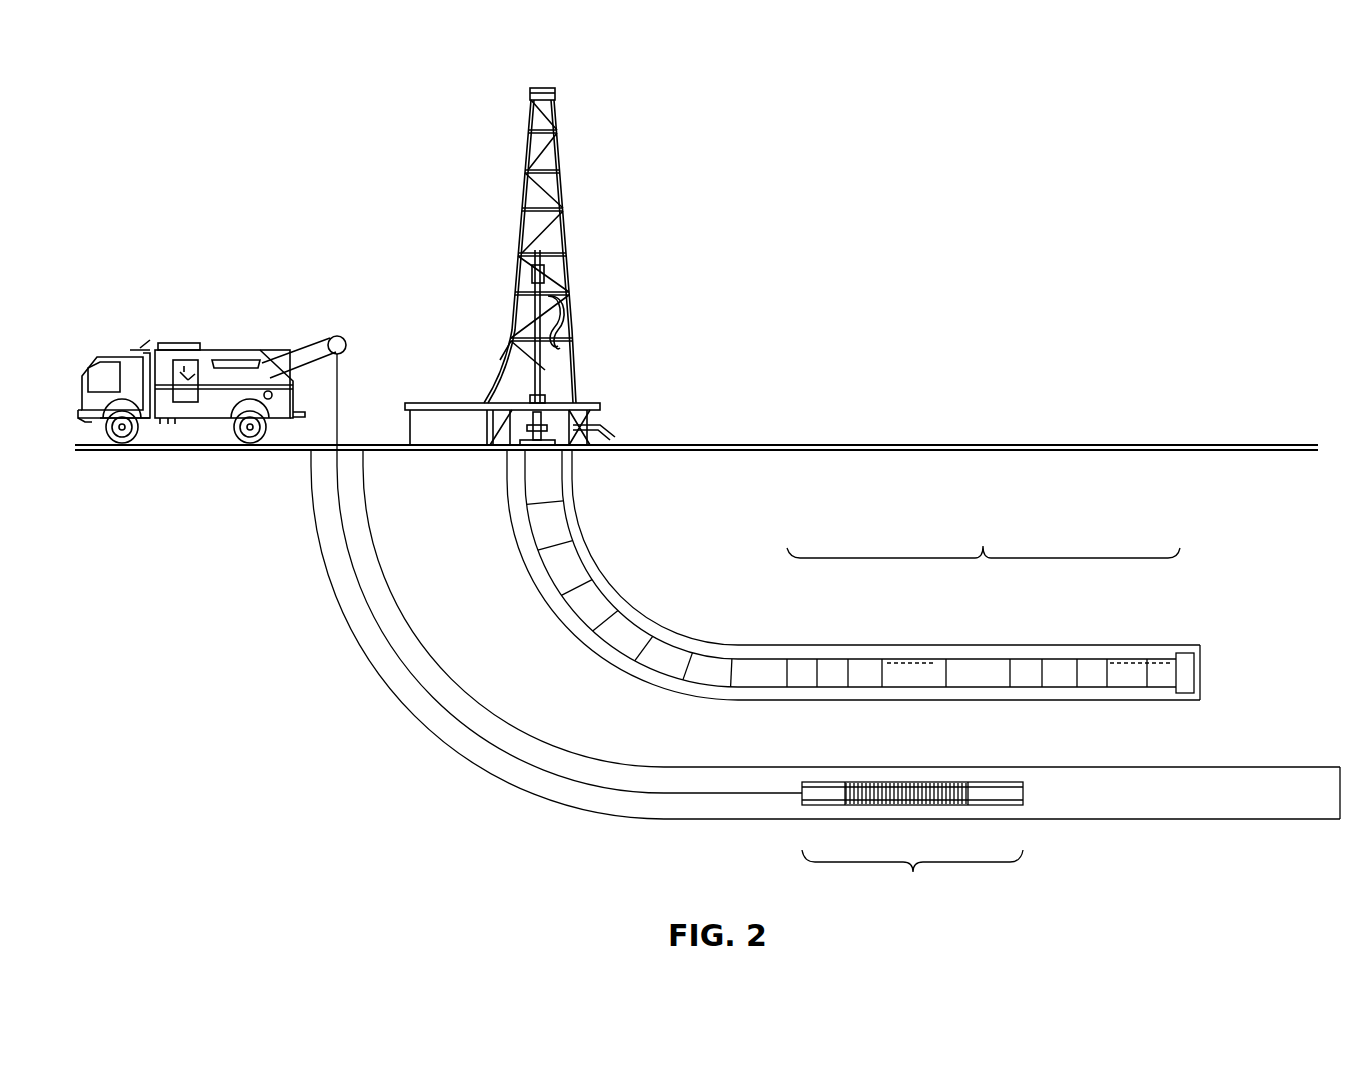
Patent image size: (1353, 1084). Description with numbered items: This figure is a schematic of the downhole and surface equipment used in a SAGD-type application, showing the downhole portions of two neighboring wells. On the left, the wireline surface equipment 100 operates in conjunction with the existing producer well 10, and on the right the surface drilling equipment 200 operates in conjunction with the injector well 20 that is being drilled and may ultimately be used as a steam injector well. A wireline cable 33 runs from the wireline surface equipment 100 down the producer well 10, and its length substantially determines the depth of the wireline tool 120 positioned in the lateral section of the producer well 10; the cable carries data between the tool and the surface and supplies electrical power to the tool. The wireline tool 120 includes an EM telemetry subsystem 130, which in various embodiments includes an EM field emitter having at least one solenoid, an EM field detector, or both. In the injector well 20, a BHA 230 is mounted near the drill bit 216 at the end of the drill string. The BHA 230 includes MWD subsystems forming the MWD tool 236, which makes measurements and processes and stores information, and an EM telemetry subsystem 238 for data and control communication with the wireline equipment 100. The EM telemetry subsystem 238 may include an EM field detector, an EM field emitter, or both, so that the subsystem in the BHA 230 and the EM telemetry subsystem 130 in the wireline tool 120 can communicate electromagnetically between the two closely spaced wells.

The producer well 10 is at (313, 527).
The injector well 20 is at (592, 545).
The wireline cable 33 is at (430, 700).
The wireline surface equipment 100 is at (185, 343).
The wireline tool 120 is at (912, 842).
The EM telemetry subsystem 130 is at (910, 805).
The surface drilling equipment 200 is at (567, 225).
The drill bit 216 is at (1195, 673).
The BHA 230 is at (983, 546).
The MWD tool 236 is at (900, 658).
The EM telemetry subsystem 238 is at (937, 660).